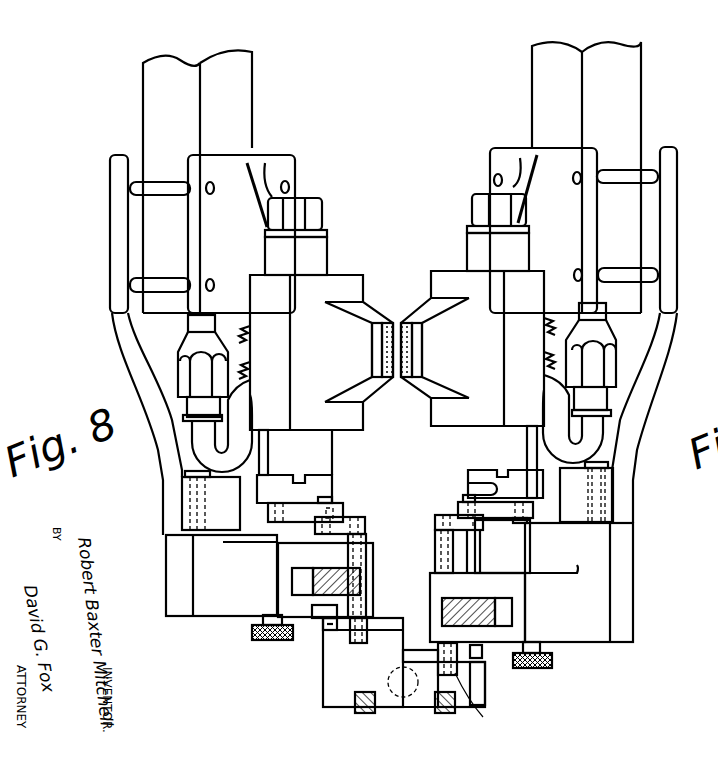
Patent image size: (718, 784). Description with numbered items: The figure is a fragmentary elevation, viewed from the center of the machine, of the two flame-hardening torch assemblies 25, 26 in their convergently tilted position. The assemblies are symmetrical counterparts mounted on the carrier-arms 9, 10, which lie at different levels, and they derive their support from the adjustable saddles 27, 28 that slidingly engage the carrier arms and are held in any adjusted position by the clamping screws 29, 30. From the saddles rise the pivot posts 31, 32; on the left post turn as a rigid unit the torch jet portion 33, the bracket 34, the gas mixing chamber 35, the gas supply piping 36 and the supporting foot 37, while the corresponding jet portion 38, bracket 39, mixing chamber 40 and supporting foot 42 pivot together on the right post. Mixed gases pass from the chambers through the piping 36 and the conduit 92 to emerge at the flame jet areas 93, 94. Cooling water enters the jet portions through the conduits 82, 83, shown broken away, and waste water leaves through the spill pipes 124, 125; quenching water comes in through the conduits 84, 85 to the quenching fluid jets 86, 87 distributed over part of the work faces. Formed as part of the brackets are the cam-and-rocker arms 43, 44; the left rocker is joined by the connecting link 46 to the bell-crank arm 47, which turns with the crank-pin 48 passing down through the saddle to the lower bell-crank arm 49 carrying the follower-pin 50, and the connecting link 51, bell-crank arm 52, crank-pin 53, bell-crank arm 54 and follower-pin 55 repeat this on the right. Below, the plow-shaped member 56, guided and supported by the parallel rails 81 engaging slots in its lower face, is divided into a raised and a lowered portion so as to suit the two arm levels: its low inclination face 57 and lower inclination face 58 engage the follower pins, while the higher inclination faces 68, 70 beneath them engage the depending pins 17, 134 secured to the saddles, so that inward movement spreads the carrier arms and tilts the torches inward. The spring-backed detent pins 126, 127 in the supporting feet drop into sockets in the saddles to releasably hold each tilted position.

The carrier-arm 9 is at (320, 567).
The carrier-arm 10 is at (467, 599).
The depending pin 17 is at (352, 638).
The flame-hardening torch assembly 25 is at (108, 254).
The flame-hardening torch assembly 26 is at (678, 249).
The adjustable saddle 27 is at (166, 591).
The adjustable saddle 28 is at (634, 597).
The clamping screw 29 is at (270, 640).
The clamping screw 30 is at (537, 668).
The pivot post 31 is at (306, 197).
The pivot post 32 is at (478, 193).
The torch jet portion 33 is at (368, 305).
The bracket 34 is at (276, 181).
The gas mixing chamber 35 is at (253, 100).
The gas supply piping 36 is at (180, 388).
The supporting foot 37 is at (150, 378).
The torch jet portion 38 is at (414, 310).
The bracket 39 is at (512, 180).
The gas mixing chamber 40 is at (543, 78).
The supporting foot 42 is at (640, 397).
The cam-and-rocker arm 43 is at (308, 480).
The cam-and-rocker arm 44 is at (470, 473).
The connecting link 46 is at (303, 510).
The bell-crank arm 47 is at (342, 518).
The crank-pin 48 is at (355, 517).
The bell-crank arm 49 is at (328, 618).
The follower-pin 50 is at (332, 635).
The connecting link 51 is at (472, 488).
The bell-crank arm 52 is at (458, 507).
The crank-pin 53 is at (443, 513).
The bell-crank arm 54 is at (482, 652).
The follower-pin 55 is at (478, 665).
The plow-shaped member 56 is at (402, 712).
The low inclination face 57 is at (378, 616).
The lower inclination face 58 is at (418, 648).
The higher inclination face 68 is at (360, 660).
The higher inclination face 70 is at (427, 673).
The parallel rail 81 is at (367, 715).
The cooling water conduit 82 is at (243, 366).
The cooling water conduit 83 is at (547, 356).
The quenching water conduit 84 is at (243, 327).
The quenching water conduit 85 is at (547, 317).
The quenching fluid jet 86 is at (370, 337).
The quenching fluid jet 87 is at (423, 337).
The gas conduit 92 is at (597, 442).
The flame jet area 93 is at (392, 378).
The flame jet area 94 is at (408, 380).
The spill pipe 124 is at (264, 453).
The spill pipe 125 is at (536, 455).
The detent pin 126 is at (192, 543).
The detent pin 127 is at (597, 527).
The depending pin 134 is at (482, 704).